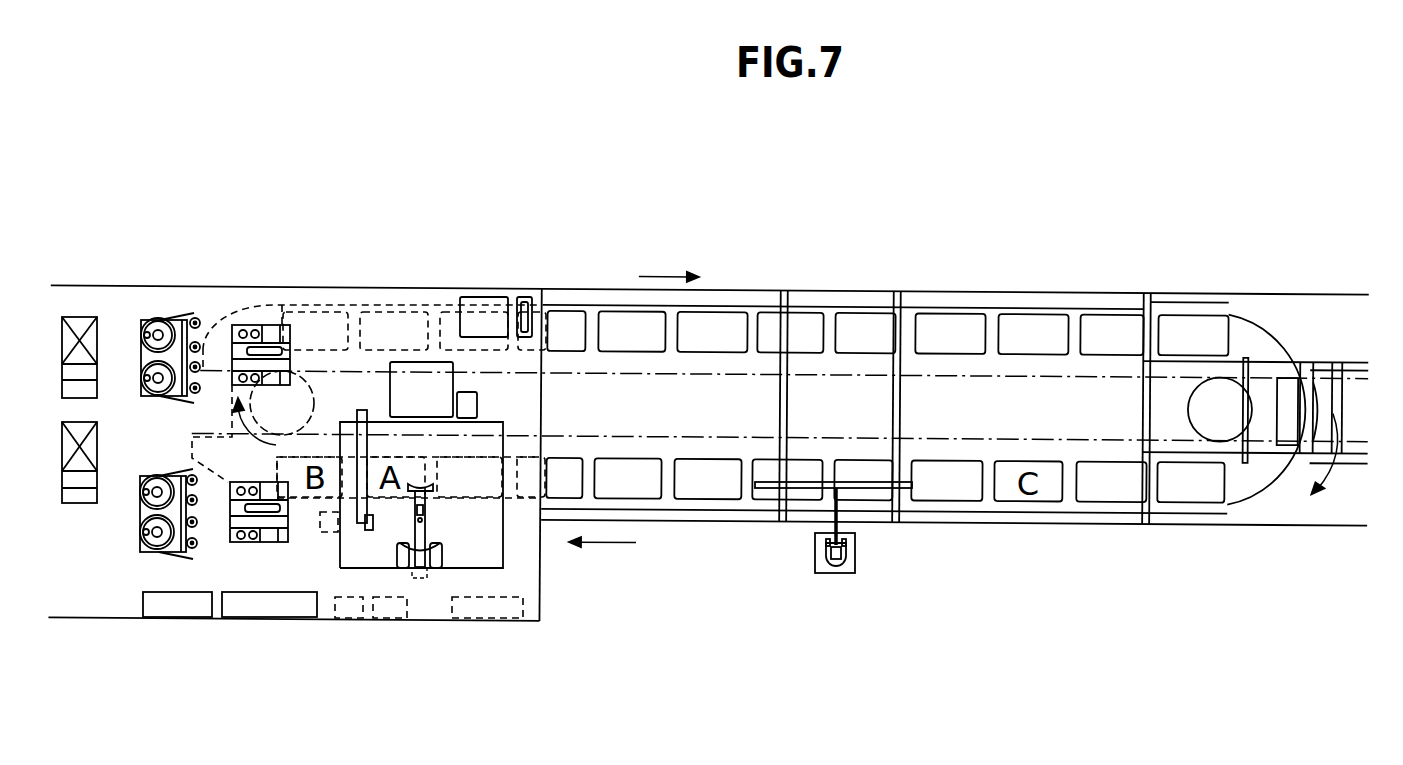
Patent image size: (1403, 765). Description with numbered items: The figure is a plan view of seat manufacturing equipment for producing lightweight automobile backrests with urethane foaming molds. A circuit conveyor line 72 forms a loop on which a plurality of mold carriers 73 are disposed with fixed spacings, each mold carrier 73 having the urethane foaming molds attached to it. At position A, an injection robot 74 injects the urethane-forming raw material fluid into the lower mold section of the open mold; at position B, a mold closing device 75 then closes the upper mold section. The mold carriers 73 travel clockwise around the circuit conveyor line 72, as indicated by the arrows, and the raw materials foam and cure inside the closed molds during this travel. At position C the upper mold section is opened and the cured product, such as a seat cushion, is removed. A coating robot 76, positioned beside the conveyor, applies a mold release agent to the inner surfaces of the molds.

The circuit conveyor line 72 is at (528, 273).
The mold carrier 73 is at (1053, 328).
The injection robot 74 is at (430, 530).
The mold closing device 75 is at (337, 547).
The coating robot 76 is at (843, 565).